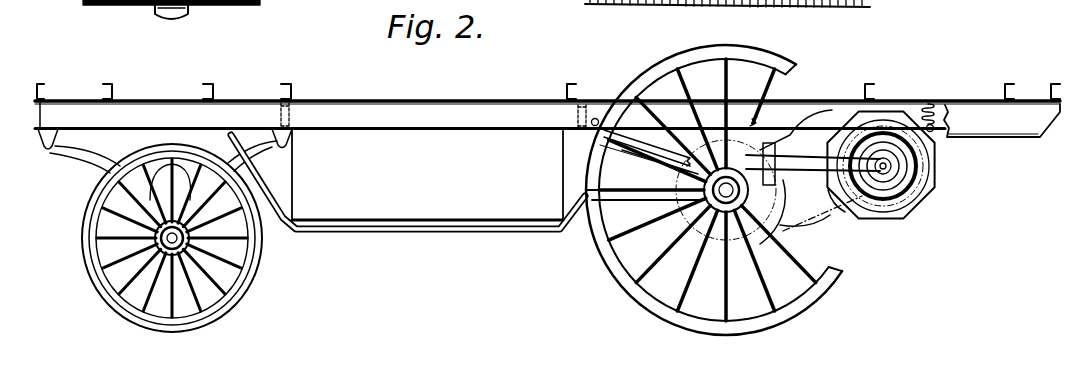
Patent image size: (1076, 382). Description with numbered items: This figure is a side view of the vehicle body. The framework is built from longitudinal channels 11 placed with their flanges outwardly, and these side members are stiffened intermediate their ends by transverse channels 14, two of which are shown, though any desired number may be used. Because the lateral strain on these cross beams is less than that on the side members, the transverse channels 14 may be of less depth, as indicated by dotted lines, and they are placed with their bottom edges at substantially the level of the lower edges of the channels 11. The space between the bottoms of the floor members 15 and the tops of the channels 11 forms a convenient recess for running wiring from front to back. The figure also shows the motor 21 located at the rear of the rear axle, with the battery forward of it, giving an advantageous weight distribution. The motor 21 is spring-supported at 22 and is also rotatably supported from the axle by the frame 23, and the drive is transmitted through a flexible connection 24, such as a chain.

The channels 11 is at (547, 115).
The transverse channels 14 is at (297, 115).
The floor members 15 is at (107, 86).
The motor 21 is at (917, 199).
The spring support 22 is at (929, 103).
The frame 23 is at (846, 208).
The flexible connection 24 is at (838, 212).